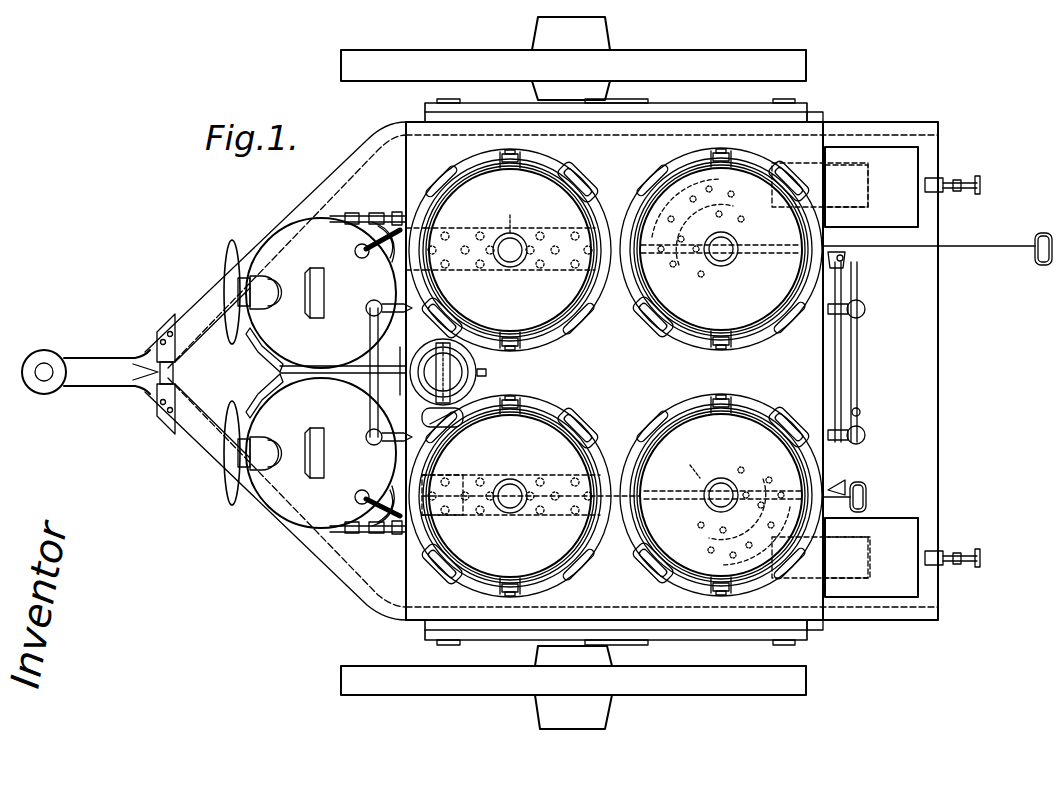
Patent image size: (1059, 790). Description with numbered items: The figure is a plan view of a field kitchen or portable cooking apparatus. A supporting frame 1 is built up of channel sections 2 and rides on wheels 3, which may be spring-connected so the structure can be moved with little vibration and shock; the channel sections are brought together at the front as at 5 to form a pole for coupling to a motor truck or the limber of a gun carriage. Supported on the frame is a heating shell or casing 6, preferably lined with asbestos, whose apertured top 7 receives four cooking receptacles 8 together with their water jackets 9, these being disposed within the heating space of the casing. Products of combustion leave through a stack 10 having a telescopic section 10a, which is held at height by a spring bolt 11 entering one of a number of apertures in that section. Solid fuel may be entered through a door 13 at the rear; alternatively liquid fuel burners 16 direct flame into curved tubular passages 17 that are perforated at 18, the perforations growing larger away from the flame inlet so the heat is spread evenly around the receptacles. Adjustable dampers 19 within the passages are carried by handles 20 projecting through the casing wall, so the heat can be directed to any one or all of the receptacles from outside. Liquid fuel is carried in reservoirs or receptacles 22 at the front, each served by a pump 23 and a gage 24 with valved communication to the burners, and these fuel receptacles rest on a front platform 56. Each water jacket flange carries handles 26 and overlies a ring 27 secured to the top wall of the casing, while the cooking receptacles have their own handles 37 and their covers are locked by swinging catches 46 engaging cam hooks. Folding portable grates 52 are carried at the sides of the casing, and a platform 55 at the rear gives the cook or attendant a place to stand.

The supporting frame 1 is at (600, 382).
The channel sections 2 is at (372, 142).
The wheels 3 is at (573, 373).
The pole 5 is at (98, 374).
The heating shell or casing 6 is at (404, 182).
The apertured top 7 is at (635, 365).
The cooking receptacles 8 is at (580, 320).
The water jackets 9 is at (546, 341).
The stack 10 is at (487, 374).
The telescopic section 10a is at (465, 362).
The spring bolt 11 is at (514, 372).
The door 13 is at (842, 356).
The liquid fuel burners 16 is at (942, 181).
The tubular passages 17 is at (607, 337).
The perforations 18 is at (520, 265).
The adjustable dampers 19 is at (666, 270).
The handles 20 is at (930, 248).
The reservoirs or receptacles 22 is at (326, 373).
The pumps 23 is at (232, 290).
The gages 24 is at (325, 294).
The handles 26 is at (436, 192).
The ring 27 is at (565, 416).
The handles 37 is at (588, 183).
The swinging catches 46 is at (516, 158).
The folding portable grates 52 is at (680, 106).
The platform 55 is at (880, 371).
The platform 56 is at (333, 372).